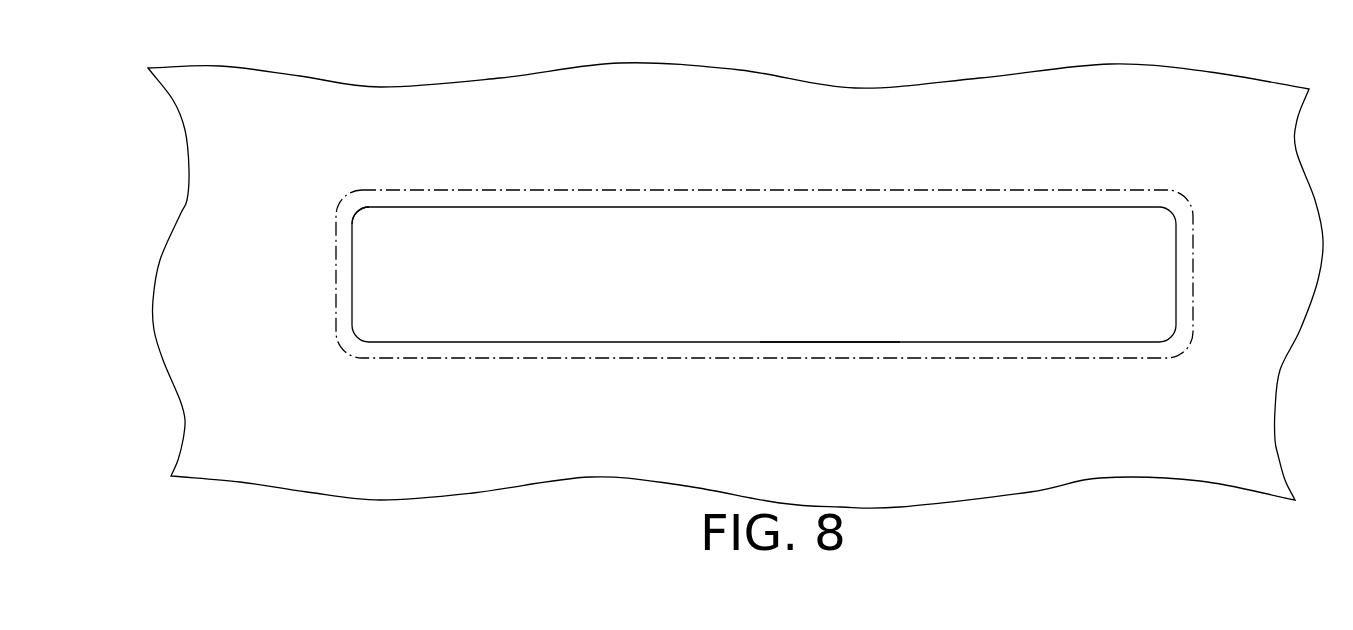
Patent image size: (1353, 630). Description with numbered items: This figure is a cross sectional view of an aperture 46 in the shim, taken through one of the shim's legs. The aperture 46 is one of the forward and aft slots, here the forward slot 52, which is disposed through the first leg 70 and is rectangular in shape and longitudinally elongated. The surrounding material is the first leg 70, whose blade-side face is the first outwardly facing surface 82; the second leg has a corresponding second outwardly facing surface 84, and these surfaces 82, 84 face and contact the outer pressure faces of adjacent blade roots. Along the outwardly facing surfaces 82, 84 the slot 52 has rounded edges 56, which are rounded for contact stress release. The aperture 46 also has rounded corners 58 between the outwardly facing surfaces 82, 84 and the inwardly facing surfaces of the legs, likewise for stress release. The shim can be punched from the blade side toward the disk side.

The first leg 70 is at (290, 77).
The first outwardly facing surface 82 is at (1145, 98).
The second outwardly facing surface 84 is at (872, 140).
The rounded edges 56 is at (490, 200).
The aperture 46 is at (1093, 238).
The rounded corners 58 is at (360, 212).
The forward slot 52 is at (823, 303).